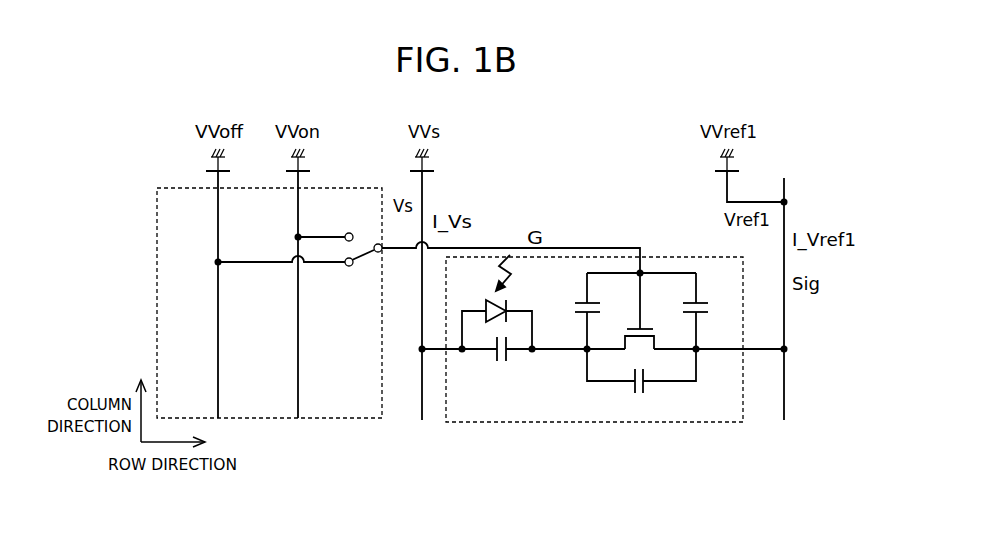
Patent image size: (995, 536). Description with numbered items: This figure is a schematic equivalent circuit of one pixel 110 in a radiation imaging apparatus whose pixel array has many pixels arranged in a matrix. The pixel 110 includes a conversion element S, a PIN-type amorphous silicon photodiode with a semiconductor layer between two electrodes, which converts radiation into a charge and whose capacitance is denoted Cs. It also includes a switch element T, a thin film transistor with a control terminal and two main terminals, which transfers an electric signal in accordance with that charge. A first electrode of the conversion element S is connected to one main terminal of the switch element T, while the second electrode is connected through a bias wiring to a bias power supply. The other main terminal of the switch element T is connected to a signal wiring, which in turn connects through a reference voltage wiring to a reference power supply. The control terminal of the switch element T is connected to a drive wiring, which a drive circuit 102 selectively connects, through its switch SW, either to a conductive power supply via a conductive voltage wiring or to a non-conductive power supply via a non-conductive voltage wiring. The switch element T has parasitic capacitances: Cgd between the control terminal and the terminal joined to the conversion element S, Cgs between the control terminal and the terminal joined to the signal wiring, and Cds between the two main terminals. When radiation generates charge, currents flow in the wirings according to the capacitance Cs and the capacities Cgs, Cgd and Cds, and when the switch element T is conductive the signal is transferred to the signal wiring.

The drive circuit 102 is at (263, 282).
The pixel 110 is at (594, 366).
The switch SW is at (357, 264).
The conversion element S is at (497, 302).
The capacity of the conversion element Cs is at (498, 365).
The capacity between the control terminal and the other main terminal Cgs is at (574, 311).
The capacity between the control terminal and the one main terminal Cgd is at (711, 311).
The switch element T is at (639, 323).
The capacity between the two main terminals Cds is at (699, 440).